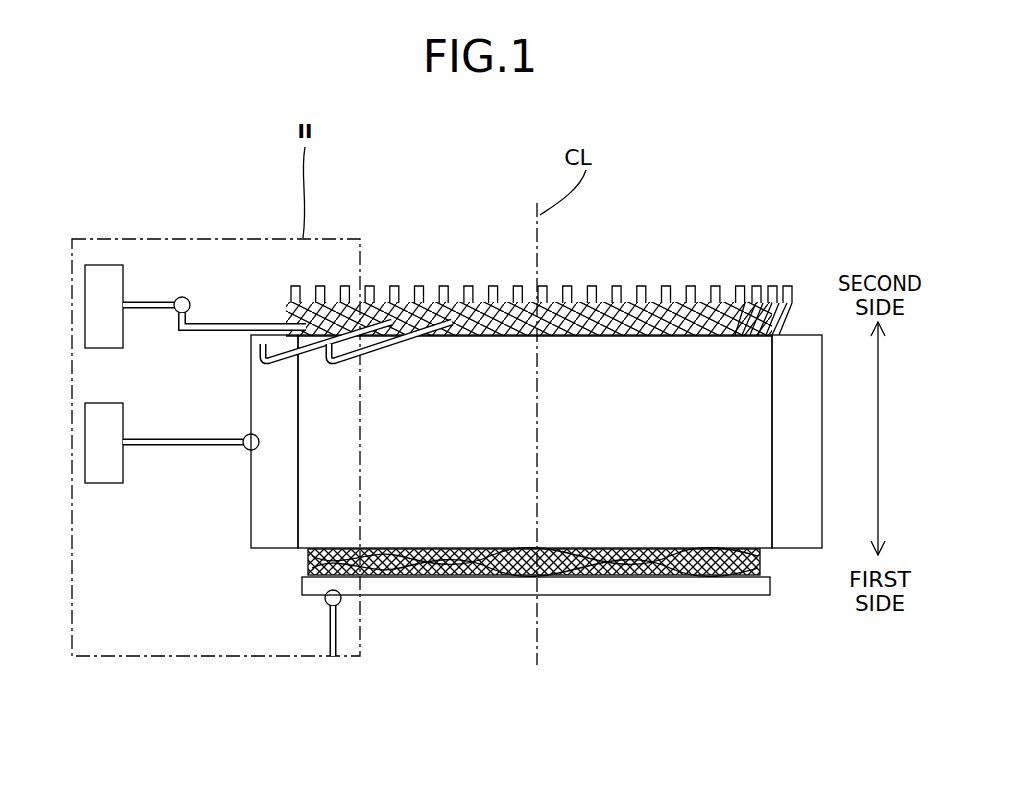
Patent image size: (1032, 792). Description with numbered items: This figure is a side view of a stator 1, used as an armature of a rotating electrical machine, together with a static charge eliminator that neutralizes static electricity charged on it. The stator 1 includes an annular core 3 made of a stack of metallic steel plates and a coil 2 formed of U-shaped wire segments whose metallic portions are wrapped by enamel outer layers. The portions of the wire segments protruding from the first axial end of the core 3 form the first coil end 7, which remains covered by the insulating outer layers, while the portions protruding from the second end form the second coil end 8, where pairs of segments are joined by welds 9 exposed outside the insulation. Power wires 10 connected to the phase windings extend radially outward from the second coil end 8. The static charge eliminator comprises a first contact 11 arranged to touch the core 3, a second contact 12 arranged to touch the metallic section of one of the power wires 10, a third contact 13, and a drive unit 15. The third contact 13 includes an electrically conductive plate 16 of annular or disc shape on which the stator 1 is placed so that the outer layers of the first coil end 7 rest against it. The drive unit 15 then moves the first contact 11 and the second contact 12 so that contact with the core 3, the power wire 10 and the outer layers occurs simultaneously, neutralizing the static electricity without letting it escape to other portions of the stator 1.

The stator 1 is at (482, 200).
The coil 2 is at (478, 568).
The core 3 is at (325, 517).
The first coil end 7 is at (775, 556).
The second coil end 8 is at (802, 300).
The welds 9 is at (408, 288).
The power wires 10 is at (229, 323).
The first contact 11 is at (247, 448).
The second contact 12 is at (176, 298).
The third contact 13 is at (326, 603).
The drive unit 15 is at (85, 305).
The plate 16 is at (406, 595).